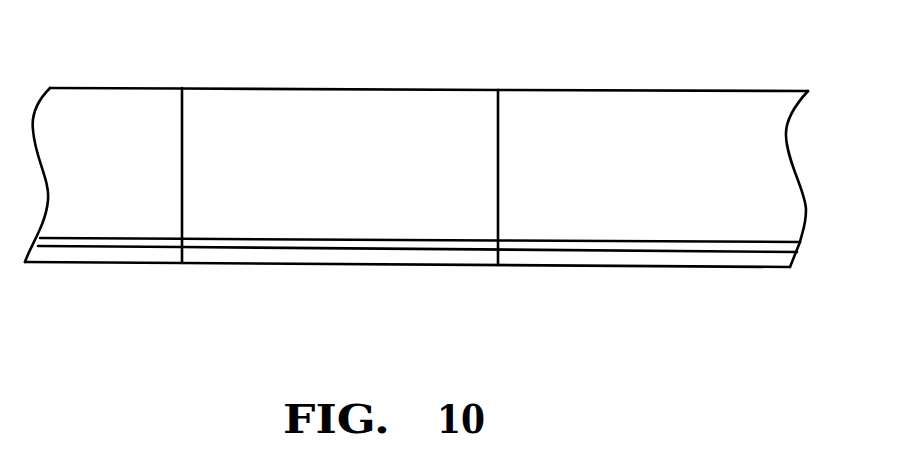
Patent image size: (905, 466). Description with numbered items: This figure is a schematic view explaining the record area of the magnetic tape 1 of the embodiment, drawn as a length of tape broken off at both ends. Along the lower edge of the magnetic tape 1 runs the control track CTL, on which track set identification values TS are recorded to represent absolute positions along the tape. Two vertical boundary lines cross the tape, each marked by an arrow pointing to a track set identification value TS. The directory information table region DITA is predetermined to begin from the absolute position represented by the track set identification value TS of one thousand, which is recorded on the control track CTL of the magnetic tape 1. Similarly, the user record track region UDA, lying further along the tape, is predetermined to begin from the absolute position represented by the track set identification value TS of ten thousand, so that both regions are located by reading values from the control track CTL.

The magnetic tape 1 is at (155, 87).
The track set identification value TS is at (182, 296).
The directory information table region DITA is at (340, 223).
The control track CTL is at (432, 248).
The user record track region UDA is at (662, 215).